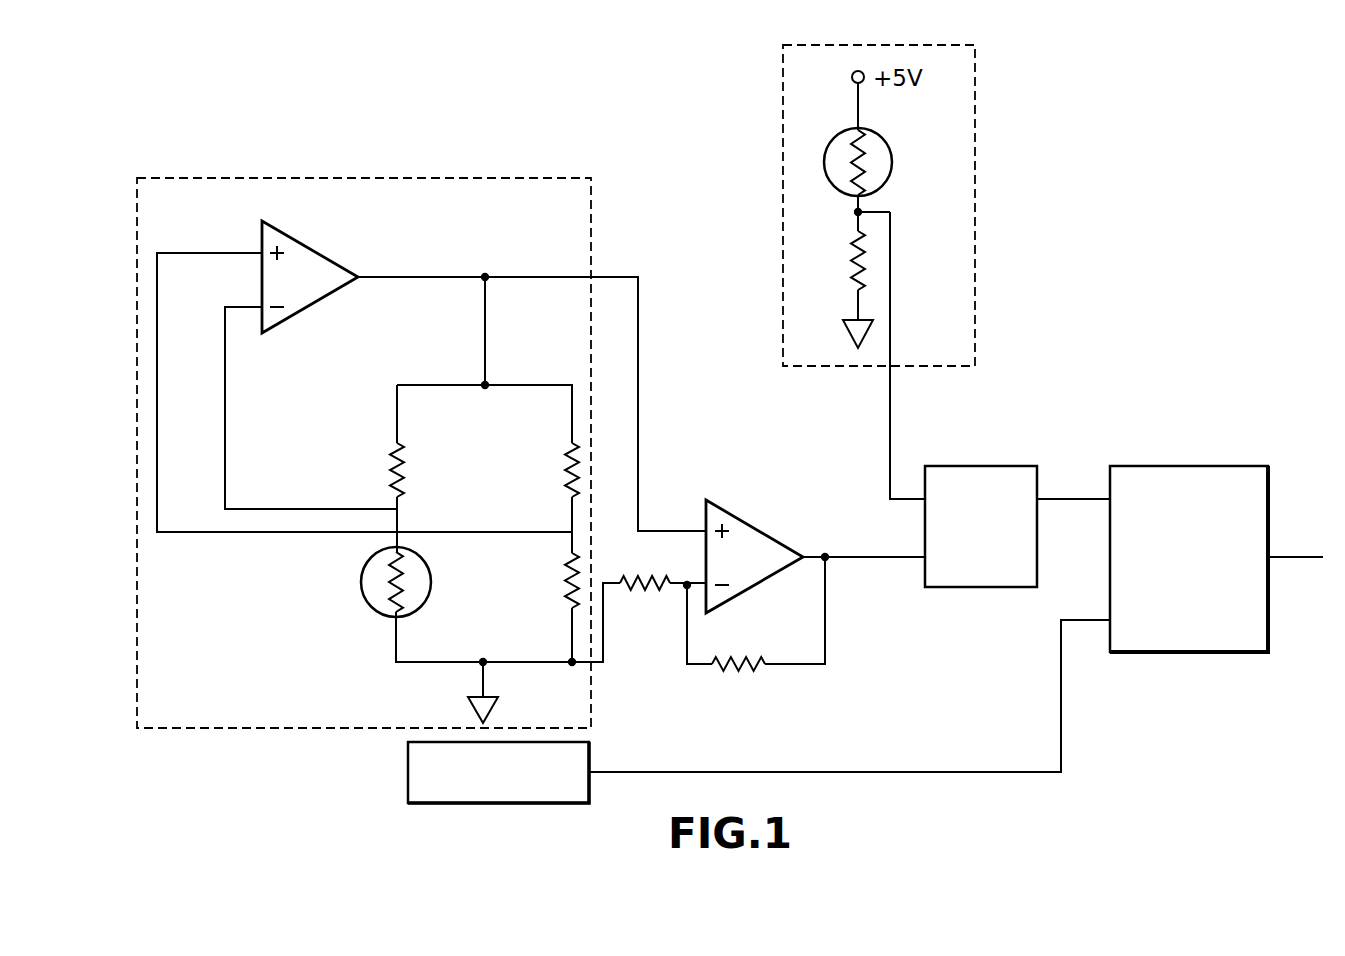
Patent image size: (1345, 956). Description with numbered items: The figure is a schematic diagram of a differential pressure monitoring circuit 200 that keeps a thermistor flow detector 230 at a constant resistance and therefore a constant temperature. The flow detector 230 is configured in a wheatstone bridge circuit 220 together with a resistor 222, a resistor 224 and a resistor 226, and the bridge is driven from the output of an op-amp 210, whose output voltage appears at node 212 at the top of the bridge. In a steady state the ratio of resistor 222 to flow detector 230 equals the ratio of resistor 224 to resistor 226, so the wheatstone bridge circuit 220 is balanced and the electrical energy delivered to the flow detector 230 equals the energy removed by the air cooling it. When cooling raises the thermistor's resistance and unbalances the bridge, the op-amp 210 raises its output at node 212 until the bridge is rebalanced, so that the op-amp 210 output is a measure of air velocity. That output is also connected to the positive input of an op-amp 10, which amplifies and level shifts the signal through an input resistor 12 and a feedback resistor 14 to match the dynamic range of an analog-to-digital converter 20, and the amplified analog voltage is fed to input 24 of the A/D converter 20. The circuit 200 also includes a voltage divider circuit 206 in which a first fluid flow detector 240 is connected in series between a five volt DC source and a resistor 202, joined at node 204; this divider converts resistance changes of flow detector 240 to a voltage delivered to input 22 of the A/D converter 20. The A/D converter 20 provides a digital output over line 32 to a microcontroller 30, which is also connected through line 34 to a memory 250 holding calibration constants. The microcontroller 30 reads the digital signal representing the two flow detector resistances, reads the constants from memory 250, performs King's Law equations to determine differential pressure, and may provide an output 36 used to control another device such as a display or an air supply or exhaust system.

The op-amp 10 is at (750, 524).
The input resistor 12 is at (650, 578).
The feedback resistor 14 is at (742, 668).
The analog-to-digital (A/D) converter 20 is at (972, 466).
The input 22 is at (902, 498).
The input 24 is at (893, 558).
The microcontroller 30 is at (1228, 466).
The A/D output line 32 is at (1085, 498).
The memory line 34 is at (1088, 619).
The output 36 is at (1290, 556).
The circuit 200 is at (514, 174).
The resistor 202 is at (851, 258).
The node 204 is at (852, 216).
The voltage divider circuit 206 is at (962, 160).
The op-amp 210 is at (307, 246).
The node 212 is at (484, 382).
The wheatstone bridge circuit 220 is at (490, 503).
The resistor 222 is at (405, 455).
The resistor 224 is at (565, 470).
The resistor 226 is at (565, 580).
The flow detector 230 is at (433, 573).
The first fluid flow detector 240 is at (886, 124).
The memory 250 is at (408, 768).